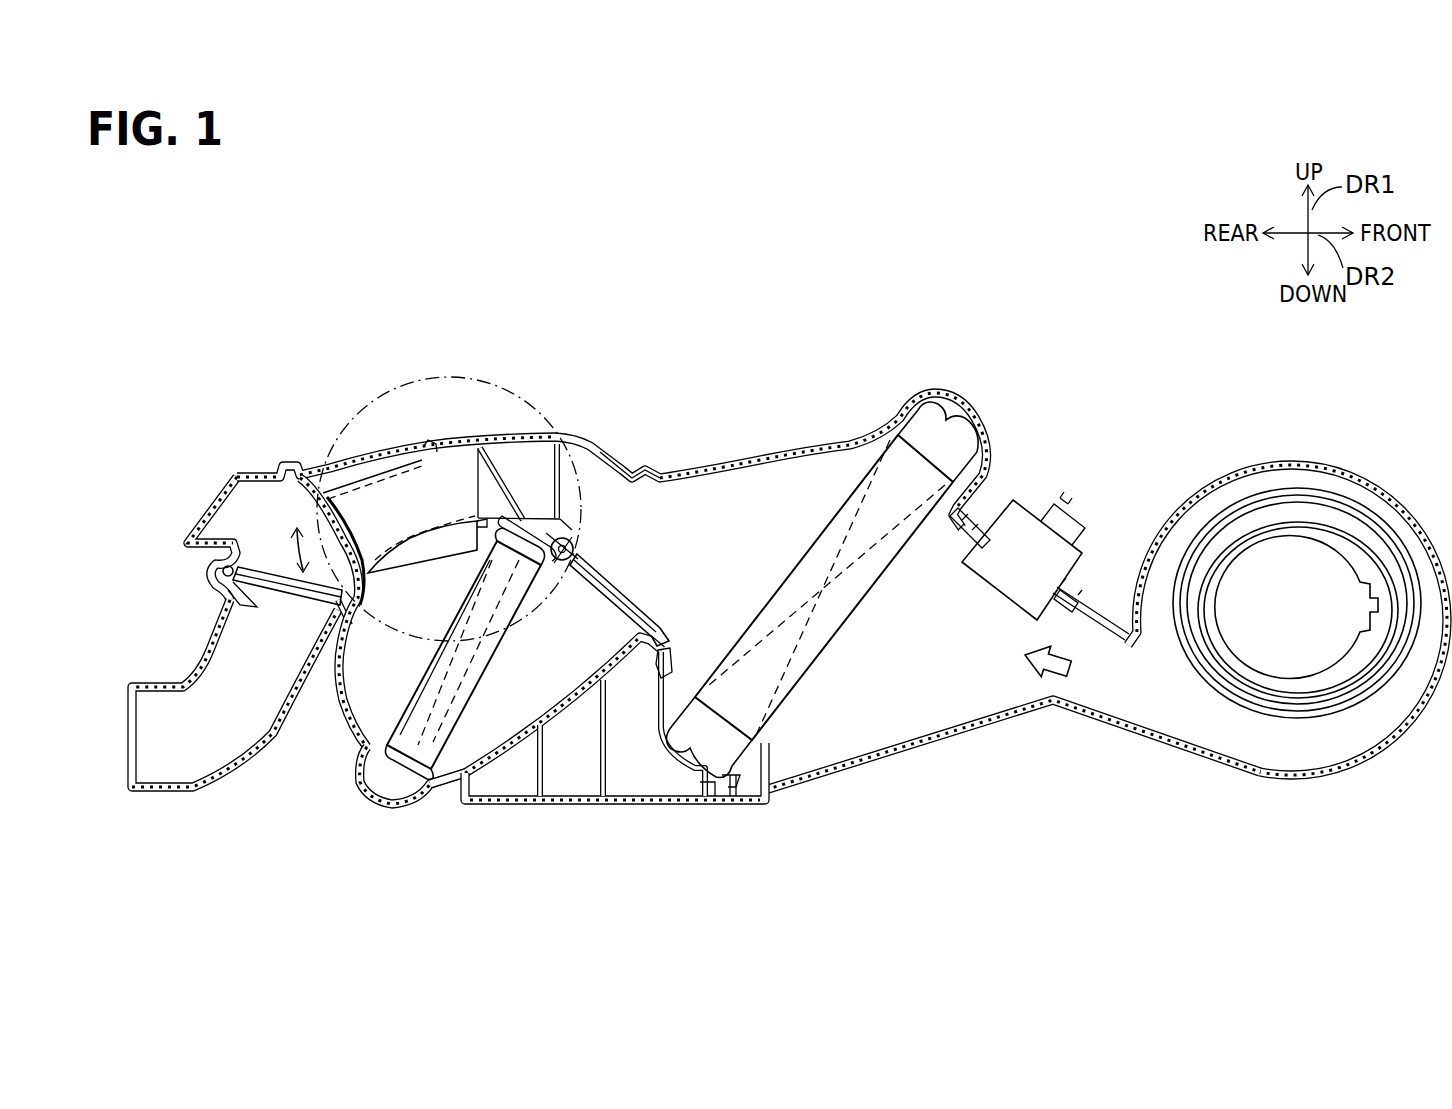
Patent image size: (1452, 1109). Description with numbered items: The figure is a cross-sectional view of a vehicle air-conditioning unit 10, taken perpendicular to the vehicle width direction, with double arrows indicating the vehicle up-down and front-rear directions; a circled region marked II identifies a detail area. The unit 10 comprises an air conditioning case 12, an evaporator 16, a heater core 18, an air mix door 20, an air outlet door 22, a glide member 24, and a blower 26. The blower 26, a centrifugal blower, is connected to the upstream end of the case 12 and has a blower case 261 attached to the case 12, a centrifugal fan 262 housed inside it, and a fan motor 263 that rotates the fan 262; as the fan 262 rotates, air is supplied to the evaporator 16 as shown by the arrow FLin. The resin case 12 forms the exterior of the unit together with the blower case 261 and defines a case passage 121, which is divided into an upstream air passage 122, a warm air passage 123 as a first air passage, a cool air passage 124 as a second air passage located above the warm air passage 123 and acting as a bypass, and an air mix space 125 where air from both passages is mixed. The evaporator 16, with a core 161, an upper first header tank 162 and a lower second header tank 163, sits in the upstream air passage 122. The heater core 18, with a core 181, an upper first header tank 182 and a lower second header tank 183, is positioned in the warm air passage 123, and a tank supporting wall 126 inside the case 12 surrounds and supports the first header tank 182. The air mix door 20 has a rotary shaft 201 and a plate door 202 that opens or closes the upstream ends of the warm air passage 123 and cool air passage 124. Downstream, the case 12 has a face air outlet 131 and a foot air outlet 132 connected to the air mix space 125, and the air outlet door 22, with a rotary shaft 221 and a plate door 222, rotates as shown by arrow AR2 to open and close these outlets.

The vehicle air-conditioning unit 10 is at (1370, 331).
The air conditioning case 12 is at (963, 733).
The case passage 121 is at (797, 440).
The upstream air passage 122 is at (832, 682).
The warm air passage 123 is at (457, 745).
The cool air passage 124 is at (621, 468).
The air mix space 125 is at (318, 520).
The tank supporting wall 126 is at (481, 518).
The face air outlet 131 is at (222, 497).
The foot air outlet 132 is at (128, 745).
The evaporator 16 is at (847, 615).
The core 161 is at (840, 610).
The first header tank 162 is at (957, 440).
The second header tank 163 is at (722, 752).
The heater core 18 is at (503, 710).
The core 181 is at (495, 680).
The first header tank 182 is at (522, 537).
The second header tank 183 is at (385, 775).
The air mix door 20 is at (652, 526).
The rotary shaft 201 is at (575, 549).
The plate door 202 is at (653, 557).
The air outlet door 22 is at (212, 604).
The rotary shaft 221 is at (228, 572).
The plate door 222 is at (268, 603).
The glide member 24 is at (582, 475).
The blower 26 is at (1287, 608).
The blower case 261 is at (1285, 465).
The centrifugal fan 262 is at (1373, 683).
The fan motor 263 is at (1327, 680).
The arrow AR2 is at (293, 550).
The arrow FLin is at (1050, 672).
The section line II is at (385, 393).